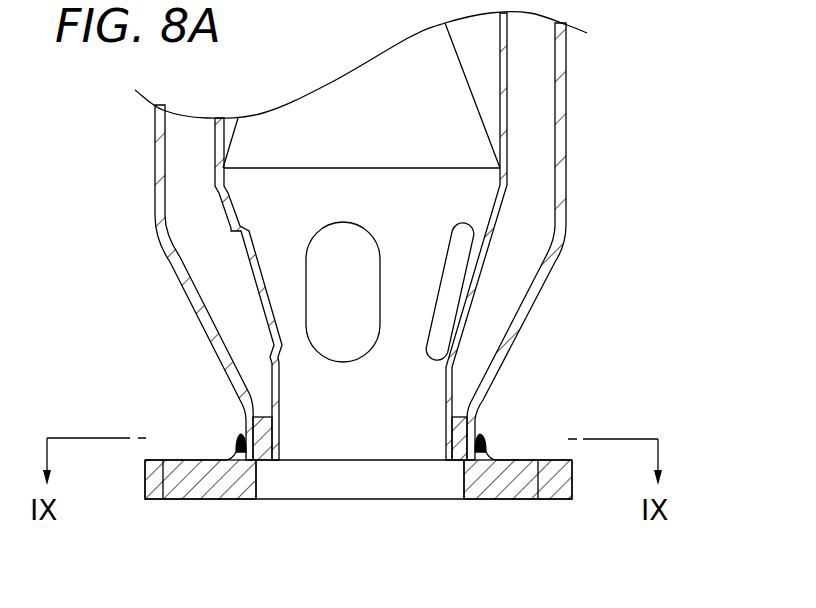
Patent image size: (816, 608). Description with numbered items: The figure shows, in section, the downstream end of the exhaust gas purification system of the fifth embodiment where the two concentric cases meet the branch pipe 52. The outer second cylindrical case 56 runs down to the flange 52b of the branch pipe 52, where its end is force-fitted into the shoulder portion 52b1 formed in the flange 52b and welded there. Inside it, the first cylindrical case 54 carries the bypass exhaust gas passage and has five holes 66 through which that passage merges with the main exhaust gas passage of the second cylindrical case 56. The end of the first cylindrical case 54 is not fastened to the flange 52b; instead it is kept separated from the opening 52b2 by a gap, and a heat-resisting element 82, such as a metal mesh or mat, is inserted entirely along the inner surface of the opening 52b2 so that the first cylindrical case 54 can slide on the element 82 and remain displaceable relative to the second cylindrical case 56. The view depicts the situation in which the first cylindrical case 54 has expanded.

The branch pipe 52 is at (578, 87).
The flange 52b is at (565, 499).
The shoulder portion 52b1 is at (463, 470).
The opening 52b2 is at (465, 487).
The first cylindrical case 54 is at (487, 234).
The second cylindrical case 56 is at (560, 184).
The holes 66 is at (437, 337).
The element 82 is at (253, 420).